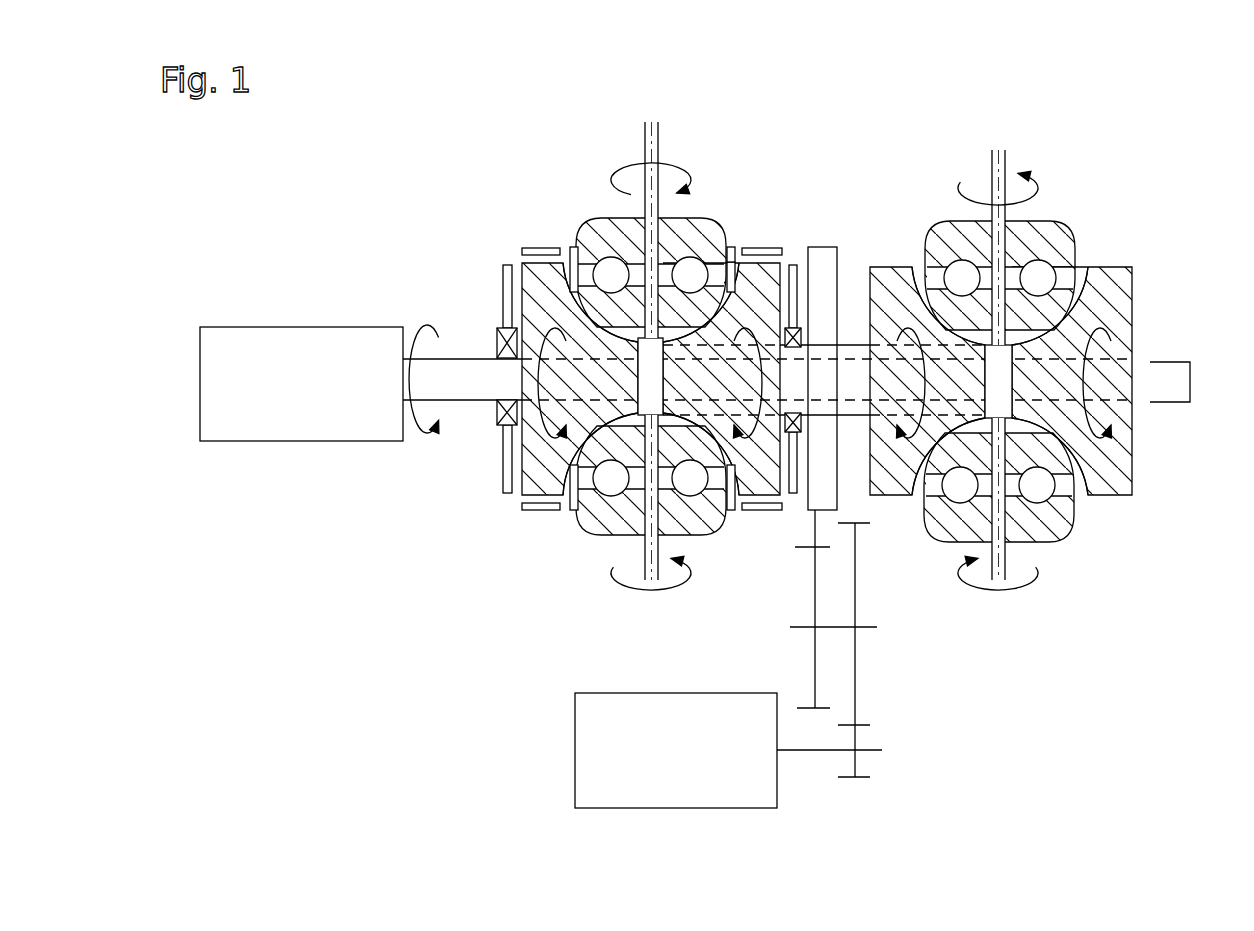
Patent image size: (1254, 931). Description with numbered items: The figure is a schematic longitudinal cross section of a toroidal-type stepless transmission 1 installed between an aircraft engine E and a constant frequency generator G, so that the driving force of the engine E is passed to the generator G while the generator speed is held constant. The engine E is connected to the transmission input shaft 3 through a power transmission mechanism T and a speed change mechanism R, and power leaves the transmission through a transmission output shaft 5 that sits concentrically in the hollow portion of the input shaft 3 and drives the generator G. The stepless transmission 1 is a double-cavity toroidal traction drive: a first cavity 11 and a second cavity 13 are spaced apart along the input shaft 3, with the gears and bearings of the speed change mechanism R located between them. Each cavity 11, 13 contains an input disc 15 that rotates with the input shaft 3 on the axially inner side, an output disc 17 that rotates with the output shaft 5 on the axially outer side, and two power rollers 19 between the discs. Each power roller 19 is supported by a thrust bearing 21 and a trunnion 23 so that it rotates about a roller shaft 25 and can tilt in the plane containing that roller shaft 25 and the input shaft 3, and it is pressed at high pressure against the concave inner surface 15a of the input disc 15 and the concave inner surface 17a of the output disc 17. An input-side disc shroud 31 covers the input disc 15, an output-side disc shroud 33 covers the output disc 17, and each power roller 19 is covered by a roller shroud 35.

The toroidal-type stepless transmission 1 is at (500, 165).
The transmission input shaft 3 is at (855, 345).
The transmission output shaft 5 is at (466, 372).
The first cavity 11 is at (748, 265).
The second cavity 13 is at (1083, 297).
The input disc 15 is at (762, 500).
The inner surface of the input disc 15a is at (733, 508).
The output disc 17 is at (527, 505).
The inner surface of the output disc 17a is at (570, 497).
The power roller 19 is at (600, 310).
The thrust bearing 21 is at (608, 275).
The trunnion 23 is at (597, 233).
The roller shaft 25 is at (645, 140).
The input-side disc shroud 31 is at (787, 262).
The output-side disc shroud 33 is at (505, 262).
The roller shroud 35 is at (735, 247).
The constant frequency generator G is at (298, 340).
The aircraft engine E is at (600, 748).
The speed change mechanism R is at (825, 247).
The power transmission mechanism T is at (880, 627).